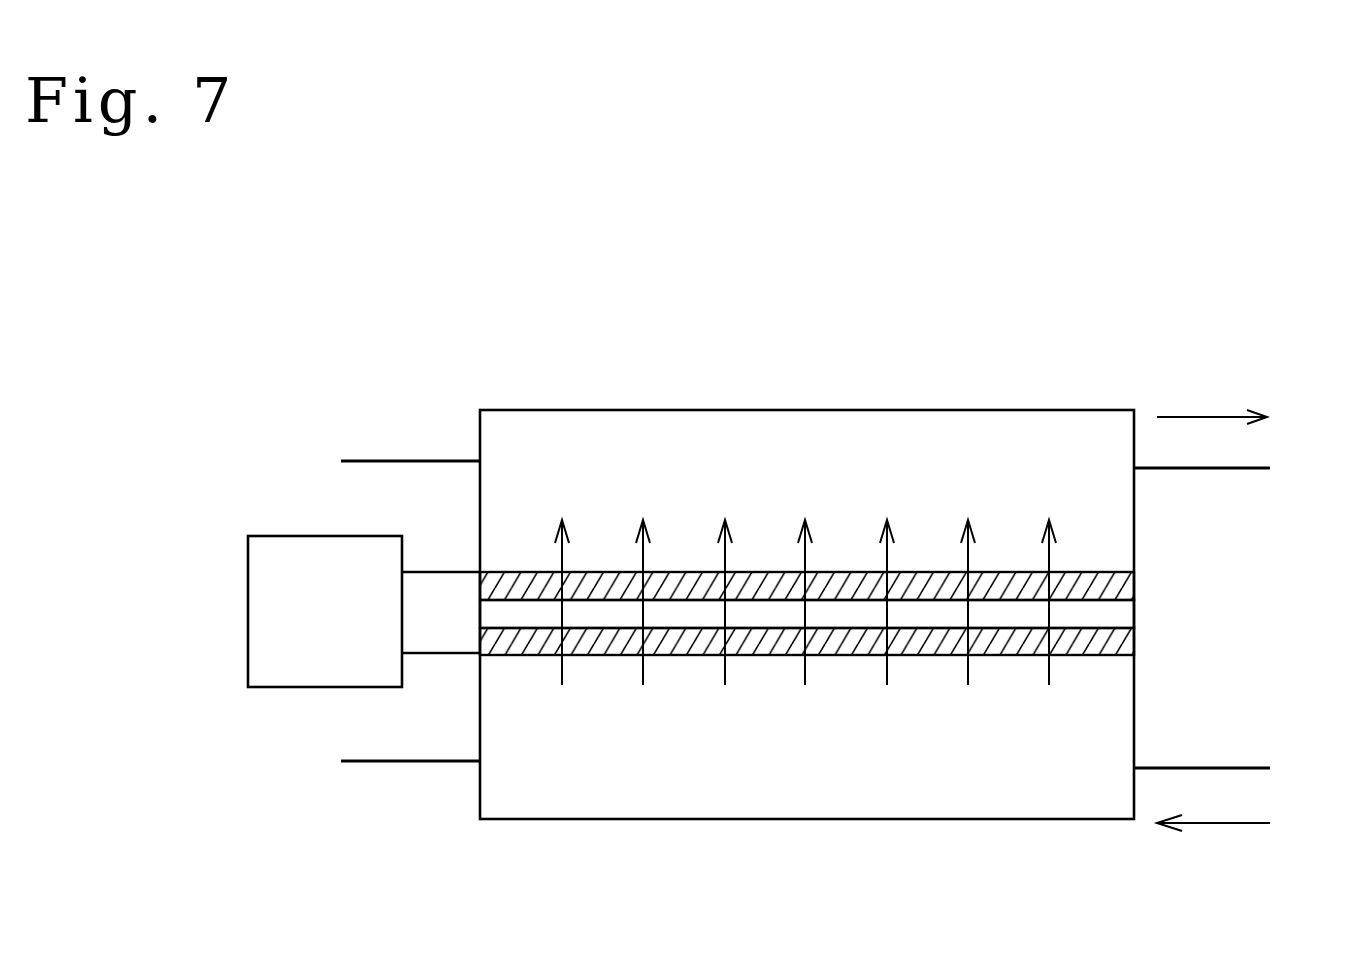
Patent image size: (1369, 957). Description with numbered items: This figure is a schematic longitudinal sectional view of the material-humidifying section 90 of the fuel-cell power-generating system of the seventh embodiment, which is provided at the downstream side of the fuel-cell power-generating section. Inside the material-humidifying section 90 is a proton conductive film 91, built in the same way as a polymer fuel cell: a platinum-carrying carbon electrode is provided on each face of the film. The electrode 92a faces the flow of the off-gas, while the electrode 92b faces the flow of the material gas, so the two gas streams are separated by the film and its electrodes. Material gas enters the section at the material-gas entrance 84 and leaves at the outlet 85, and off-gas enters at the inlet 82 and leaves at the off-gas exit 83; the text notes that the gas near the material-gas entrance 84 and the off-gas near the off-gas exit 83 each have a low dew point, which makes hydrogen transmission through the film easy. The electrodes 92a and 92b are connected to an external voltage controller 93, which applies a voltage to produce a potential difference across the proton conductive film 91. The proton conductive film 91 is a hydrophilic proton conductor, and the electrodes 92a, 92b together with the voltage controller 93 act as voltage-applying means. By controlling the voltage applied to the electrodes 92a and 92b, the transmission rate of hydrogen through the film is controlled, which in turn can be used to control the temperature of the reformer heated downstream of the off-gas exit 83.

The water vapor inlet pipe 82 is at (1220, 770).
The off-gas exit 83 is at (403, 762).
The material-gas entrance 84 is at (402, 460).
The outlet pipe 85 is at (1243, 470).
The material-humidifying section 90 is at (818, 819).
The proton conductive film 91 is at (755, 633).
The electrode 92a is at (1134, 585).
The electrode 92b is at (1134, 643).
The voltage controller 93 is at (248, 645).